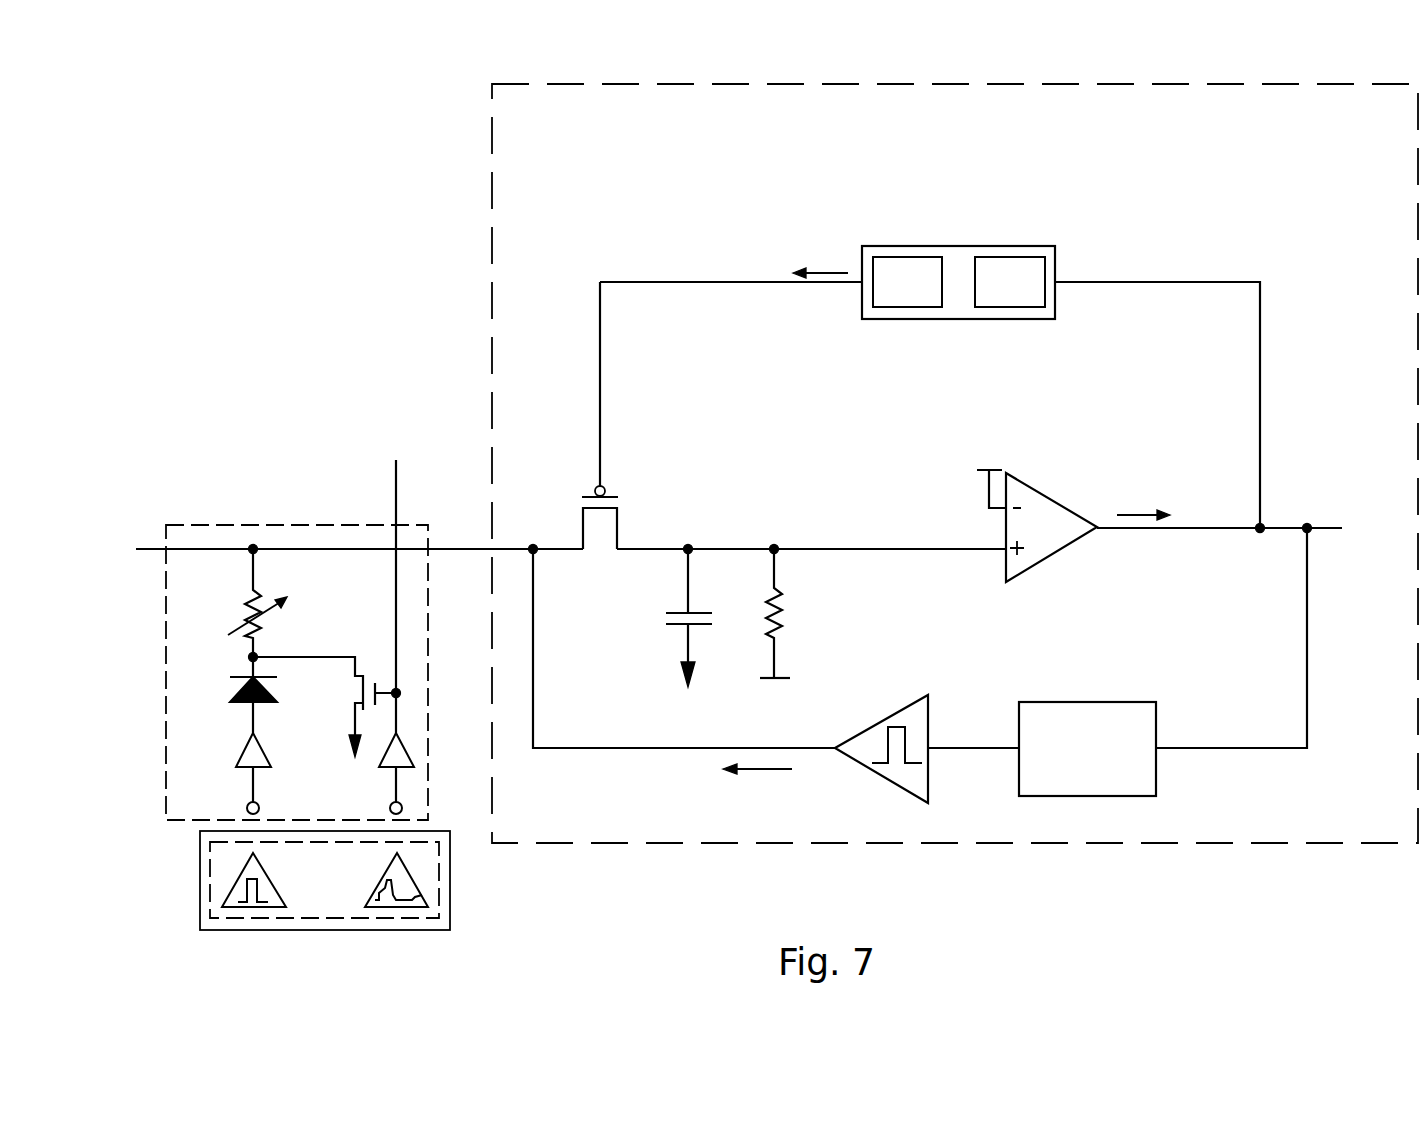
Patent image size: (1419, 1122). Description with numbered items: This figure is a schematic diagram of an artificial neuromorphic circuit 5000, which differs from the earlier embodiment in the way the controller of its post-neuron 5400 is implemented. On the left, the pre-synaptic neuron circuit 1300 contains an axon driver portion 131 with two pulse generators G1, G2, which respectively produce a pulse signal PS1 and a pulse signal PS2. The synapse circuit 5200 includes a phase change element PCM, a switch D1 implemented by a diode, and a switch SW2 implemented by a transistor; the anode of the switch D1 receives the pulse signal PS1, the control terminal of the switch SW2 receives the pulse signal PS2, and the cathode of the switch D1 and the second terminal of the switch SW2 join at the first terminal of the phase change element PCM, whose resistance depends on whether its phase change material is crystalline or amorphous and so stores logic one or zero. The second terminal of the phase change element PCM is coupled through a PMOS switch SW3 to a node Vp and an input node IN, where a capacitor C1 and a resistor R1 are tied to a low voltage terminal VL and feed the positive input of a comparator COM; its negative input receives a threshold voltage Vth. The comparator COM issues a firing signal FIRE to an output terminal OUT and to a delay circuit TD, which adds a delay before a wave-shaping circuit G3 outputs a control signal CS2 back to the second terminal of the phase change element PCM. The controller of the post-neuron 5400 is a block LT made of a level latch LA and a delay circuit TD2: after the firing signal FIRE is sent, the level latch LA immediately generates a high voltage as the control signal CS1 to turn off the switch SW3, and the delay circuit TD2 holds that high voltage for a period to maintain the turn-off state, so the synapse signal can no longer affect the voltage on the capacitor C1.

The artificial neuromorphic circuit 5000 is at (224, 110).
The post-neuron 5400 is at (492, 108).
The synapse circuit 5200 is at (283, 525).
The pre-synaptic neuron circuit 1300 is at (200, 831).
The signal generating unit 131 is at (210, 848).
The pulse generator G1 is at (243, 870).
The pulse signal PS1 is at (231, 893).
The pulse generator G2 is at (407, 870).
The pulse signal PS2 is at (421, 895).
The phase change element PCM is at (232, 603).
The switch D1 is at (234, 695).
The switch SW2 is at (327, 707).
The switch SW3 is at (600, 435).
The pixel node voltage Vp is at (689, 530).
The input node IN is at (774, 549).
The capacitor C1 is at (672, 618).
The resistor R1 is at (755, 613).
The voltage terminal VL is at (777, 701).
The threshold voltage Vth is at (988, 470).
The comparator COM is at (1053, 498).
The firing signal FIRE is at (1219, 504).
The output terminal OUT is at (1307, 528).
The latch circuit LT is at (960, 246).
The control signal CS1 is at (820, 259).
The delay circuit TD2 is at (907, 282).
The level latch LA is at (1010, 282).
The wave-shaping circuit G3 is at (882, 720).
The delay circuit TD is at (1083, 702).
The control signal CS2 is at (757, 786).